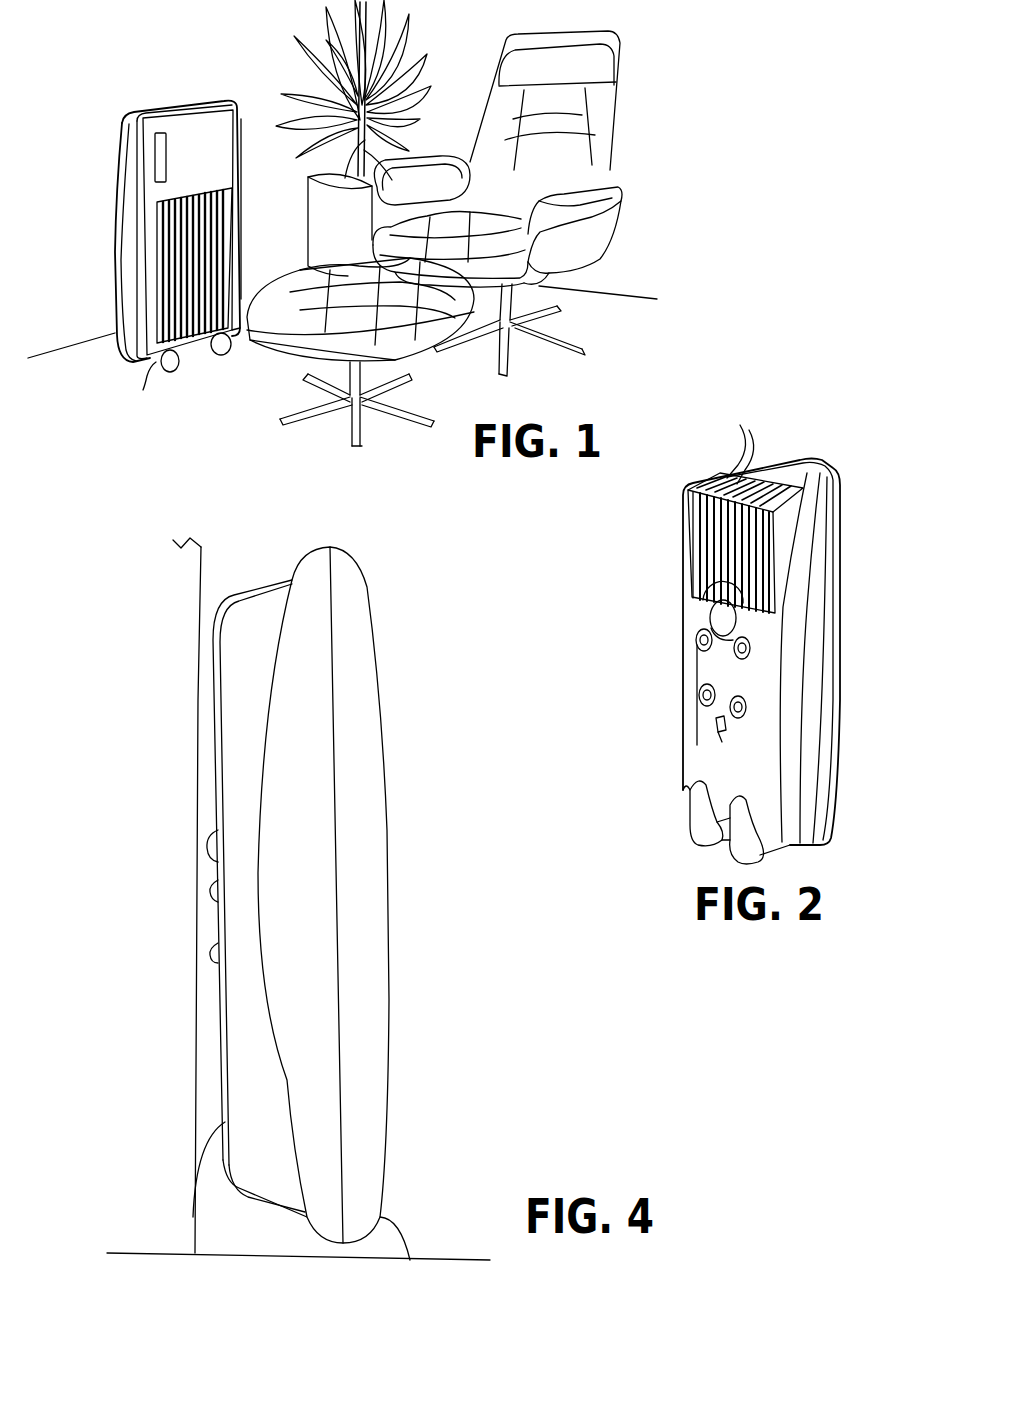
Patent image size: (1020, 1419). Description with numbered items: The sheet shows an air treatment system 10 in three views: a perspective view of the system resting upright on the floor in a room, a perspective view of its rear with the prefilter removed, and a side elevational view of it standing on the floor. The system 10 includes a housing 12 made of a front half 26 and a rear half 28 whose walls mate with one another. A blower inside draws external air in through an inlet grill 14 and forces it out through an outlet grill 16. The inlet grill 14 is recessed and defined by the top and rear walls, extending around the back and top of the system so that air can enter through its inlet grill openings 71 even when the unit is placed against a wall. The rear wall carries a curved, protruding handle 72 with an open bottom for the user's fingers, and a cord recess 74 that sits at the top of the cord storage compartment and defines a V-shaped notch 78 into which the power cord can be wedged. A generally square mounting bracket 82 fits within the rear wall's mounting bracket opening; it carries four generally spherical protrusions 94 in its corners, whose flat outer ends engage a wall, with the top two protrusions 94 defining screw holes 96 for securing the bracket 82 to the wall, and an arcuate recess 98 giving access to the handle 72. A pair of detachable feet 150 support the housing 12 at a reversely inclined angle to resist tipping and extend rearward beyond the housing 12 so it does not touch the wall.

In FIG. 1, the air treatment system 10 is at (58, 149).
In FIG. 2, the air treatment system 10 is at (872, 520).
In FIG. 4, the air treatment system 10 is at (412, 662).
In FIG. 1, the housing 12 is at (117, 237).
In FIG. 2, the housing 12 is at (838, 649).
In FIG. 4, the housing 12 is at (383, 824).
In FIG. 2, the inlet grill 14 is at (698, 578).
In FIG. 1, the outlet grill 16 is at (141, 392).
In FIG. 4, the front half 26 is at (390, 1004).
In FIG. 4, the rear half 28 is at (256, 587).
In FIG. 2, the inlet grill openings 71 is at (729, 447).
In FIG. 2, the handle 72 is at (727, 613).
In FIG. 4, the handle 72 is at (212, 840).
In FIG. 2, the cord recess 74 is at (728, 723).
In FIG. 2, the V-shaped notch 78 is at (723, 731).
In FIG. 2, the mounting bracket 82 is at (710, 670).
In FIG. 2, the spherical protrusions 94 is at (699, 654).
In FIG. 4, the spherical protrusions 94 is at (213, 887).
In FIG. 2, the screw holes 96 is at (700, 634).
In FIG. 2, the arcuate recess 98 is at (733, 632).
In FIG. 4, the feet 150 is at (400, 1223).